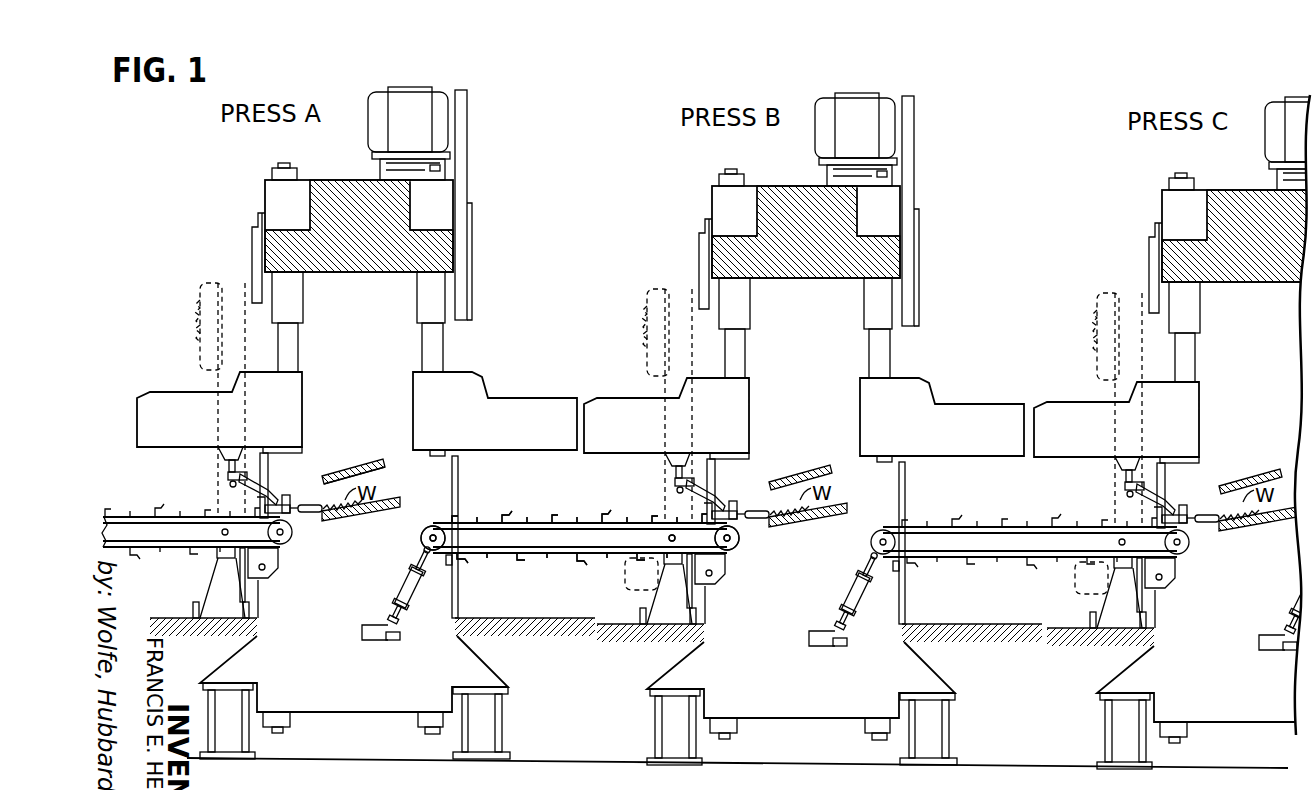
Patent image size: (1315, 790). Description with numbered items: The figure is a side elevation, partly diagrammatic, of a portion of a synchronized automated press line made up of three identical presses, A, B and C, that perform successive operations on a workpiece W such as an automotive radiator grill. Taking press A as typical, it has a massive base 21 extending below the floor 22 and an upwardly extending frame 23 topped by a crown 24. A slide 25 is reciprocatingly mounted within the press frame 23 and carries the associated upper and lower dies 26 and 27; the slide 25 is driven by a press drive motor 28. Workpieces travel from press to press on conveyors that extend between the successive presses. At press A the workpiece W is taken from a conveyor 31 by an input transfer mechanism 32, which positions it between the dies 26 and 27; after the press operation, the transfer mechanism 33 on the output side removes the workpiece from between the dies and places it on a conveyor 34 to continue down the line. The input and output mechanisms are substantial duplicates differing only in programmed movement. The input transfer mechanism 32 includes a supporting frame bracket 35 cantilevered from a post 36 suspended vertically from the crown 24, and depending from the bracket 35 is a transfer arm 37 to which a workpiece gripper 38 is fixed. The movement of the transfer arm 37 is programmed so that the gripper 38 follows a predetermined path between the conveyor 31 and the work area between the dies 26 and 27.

The base 21 is at (472, 668).
The floor 22 is at (490, 616).
The frame 23 is at (466, 333).
The crown 24 is at (265, 195).
The slide 25 is at (360, 462).
The upper die 26 is at (382, 468).
The lower die 27 is at (383, 521).
The press drive motor 28 is at (410, 87).
The conveyor 31 is at (125, 512).
The input transfer mechanism 32 is at (168, 390).
The transfer mechanism 33 is at (548, 392).
The conveyor 34 is at (558, 518).
The supporting frame bracket 35 is at (196, 426).
The post 36 is at (300, 351).
The transfer arm 37 is at (280, 490).
The workpiece gripper 38 is at (297, 521).